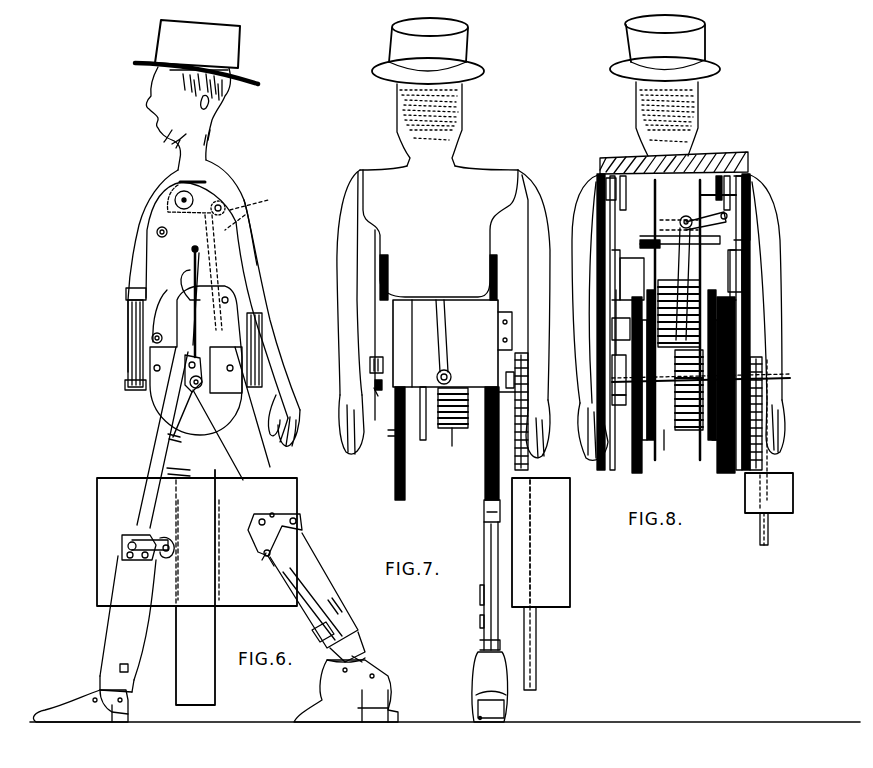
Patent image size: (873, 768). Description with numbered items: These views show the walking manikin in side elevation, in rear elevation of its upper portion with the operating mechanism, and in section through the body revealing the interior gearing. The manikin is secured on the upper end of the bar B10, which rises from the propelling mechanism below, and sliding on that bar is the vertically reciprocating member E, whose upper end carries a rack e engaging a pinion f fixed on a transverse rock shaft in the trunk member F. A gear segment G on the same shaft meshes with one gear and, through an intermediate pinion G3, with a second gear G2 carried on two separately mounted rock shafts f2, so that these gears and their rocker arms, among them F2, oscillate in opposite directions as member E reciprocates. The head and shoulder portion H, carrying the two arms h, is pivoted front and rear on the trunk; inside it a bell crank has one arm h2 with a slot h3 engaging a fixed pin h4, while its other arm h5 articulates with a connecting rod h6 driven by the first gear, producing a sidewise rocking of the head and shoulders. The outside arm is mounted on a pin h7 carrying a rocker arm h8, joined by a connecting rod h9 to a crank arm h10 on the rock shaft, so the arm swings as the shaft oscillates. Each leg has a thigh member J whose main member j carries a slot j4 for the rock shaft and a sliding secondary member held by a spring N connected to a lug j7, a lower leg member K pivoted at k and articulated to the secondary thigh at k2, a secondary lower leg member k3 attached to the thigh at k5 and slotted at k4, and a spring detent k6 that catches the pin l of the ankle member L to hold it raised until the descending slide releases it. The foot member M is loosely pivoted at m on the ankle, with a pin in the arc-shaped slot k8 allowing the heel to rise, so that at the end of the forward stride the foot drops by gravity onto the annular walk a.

In FIG. 6, the head and shoulder member H is at (210, 166).
In FIG. 7, the head and shoulder member H is at (439, 231).
In FIG. 8, the head and shoulder member H is at (696, 140).
In FIG. 6, the arm h is at (250, 268).
In FIG. 7, the arm h is at (340, 326).
In FIG. 8, the arm h is at (598, 246).
In FIG. 8, the bell crank arm h2 is at (722, 185).
In FIG. 8, the slot h3 is at (734, 196).
In FIG. 8, the pin h4 is at (726, 176).
In FIG. 8, the bell crank arm h5 is at (656, 206).
In FIG. 8, the connecting rod h6 is at (696, 248).
In FIG. 8, the pin h7 is at (624, 176).
In FIG. 8, the rocker arm h8 is at (604, 174).
In FIG. 6, the connecting rod h9 is at (247, 214).
In FIG. 7, the connecting rod h9 is at (340, 292).
In FIG. 8, the connecting rod h9 is at (620, 322).
In FIG. 6, the crank arm h10 is at (185, 372).
In FIG. 7, the crank arm h10 is at (370, 362).
In FIG. 8, the crank arm h10 is at (640, 400).
In FIG. 6, the spring N is at (126, 294).
In FIG. 7, the spring N is at (388, 266).
In FIG. 8, the spring N is at (630, 274).
In FIG. 6, the trunk member F is at (128, 326).
In FIG. 7, the trunk member F is at (452, 343).
In FIG. 8, the trunk member F is at (750, 300).
In FIG. 6, the rocker arm F2 is at (235, 255).
In FIG. 7, the pinion f is at (516, 392).
In FIG. 8, the pinion f is at (703, 382).
In FIG. 6, the rock shaft f2 is at (152, 296).
In FIG. 8, the rock shaft f2 is at (578, 292).
In FIG. 7, the gear segment G is at (452, 447).
In FIG. 8, the gear segment G is at (698, 432).
In FIG. 6, the gear G2 is at (186, 270).
In FIG. 8, the gear G2 is at (644, 250).
In FIG. 8, the intermediate pinion G3 is at (612, 368).
In FIG. 6, the thigh member J is at (210, 385).
In FIG. 7, the thigh member J is at (394, 458).
In FIG. 8, the thigh member J is at (683, 385).
In FIG. 6, the main thigh member j is at (150, 458).
In FIG. 8, the main thigh member j is at (632, 462).
In FIG. 6, the slot j4 is at (190, 385).
In FIG. 6, the lug j7 is at (181, 475).
In FIG. 7, the lug j7 is at (484, 448).
In FIG. 8, the lug j7 is at (618, 447).
In FIG. 6, the lower leg member K is at (108, 612).
In FIG. 7, the lower leg member K is at (484, 576).
In FIG. 6, the pivot k is at (173, 549).
In FIG. 6, the articulation point k2 is at (125, 540).
In FIG. 6, the secondary lower leg member k3 is at (268, 565).
In FIG. 6, the slot k4 is at (312, 635).
In FIG. 6, the articulation point k5 is at (262, 552).
In FIG. 7, the articulation point k5 is at (484, 522).
In FIG. 6, the spring detent k6 is at (310, 602).
In FIG. 7, the spring detent k6 is at (480, 590).
In FIG. 6, the slot k8 is at (129, 665).
In FIG. 6, the pin l is at (324, 625).
In FIG. 7, the pin l is at (480, 624).
In FIG. 6, the ankle member L is at (96, 660).
In FIG. 7, the ankle member L is at (482, 645).
In FIG. 6, the foot member M is at (62, 695).
In FIG. 7, the foot member M is at (505, 710).
In FIG. 6, the pivot m is at (95, 700).
In FIG. 6, the reciprocating member E is at (200, 680).
In FIG. 7, the reciprocating member E is at (524, 626).
In FIG. 8, the reciprocating member E is at (758, 520).
In FIG. 6, the bar B10 is at (216, 696).
In FIG. 7, the bar B10 is at (538, 628).
In FIG. 8, the bar B10 is at (766, 548).
In FIG. 7, the rack e is at (528, 466).
In FIG. 8, the rack e is at (750, 470).
In FIG. 7, the annular walk a is at (429, 711).